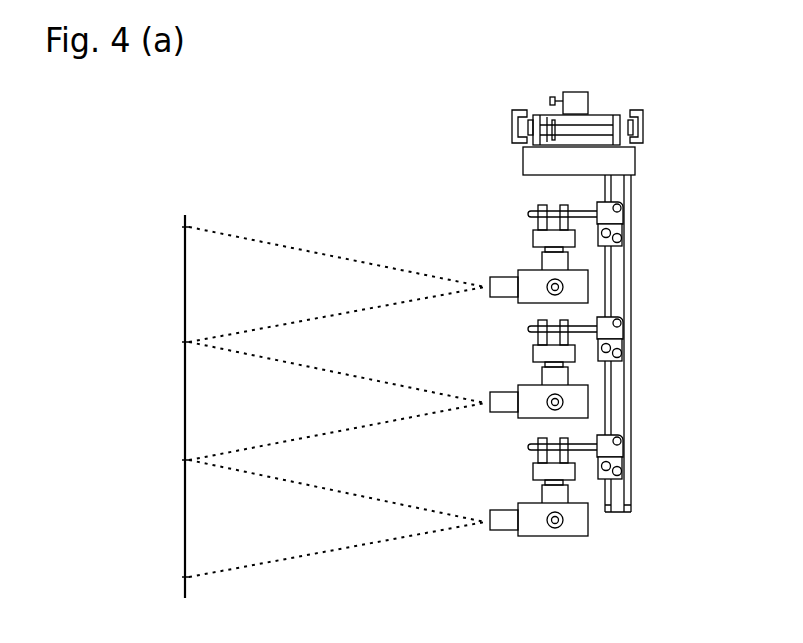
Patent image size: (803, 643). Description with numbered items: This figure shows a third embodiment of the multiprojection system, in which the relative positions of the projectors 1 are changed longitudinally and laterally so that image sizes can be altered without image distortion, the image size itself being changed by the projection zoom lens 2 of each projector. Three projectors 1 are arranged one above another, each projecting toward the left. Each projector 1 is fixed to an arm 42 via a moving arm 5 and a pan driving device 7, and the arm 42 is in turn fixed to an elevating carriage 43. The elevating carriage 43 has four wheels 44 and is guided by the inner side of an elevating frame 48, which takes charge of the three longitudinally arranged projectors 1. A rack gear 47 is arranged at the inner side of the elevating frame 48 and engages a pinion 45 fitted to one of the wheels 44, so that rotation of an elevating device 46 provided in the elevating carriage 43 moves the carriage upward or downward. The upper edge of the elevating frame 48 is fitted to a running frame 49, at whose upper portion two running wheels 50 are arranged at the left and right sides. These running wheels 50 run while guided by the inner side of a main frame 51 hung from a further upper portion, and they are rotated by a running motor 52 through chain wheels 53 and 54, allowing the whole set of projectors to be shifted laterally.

The projector 1 is at (535, 527).
The projection zoom lens 2 is at (502, 522).
The moving arm 5 is at (560, 502).
The pan driving device 7 is at (570, 475).
The arm 42 is at (530, 447).
The elevating carriage 43 is at (617, 450).
The wheels 44 is at (628, 417).
The pinion 45 is at (628, 495).
The elevating device 46 is at (608, 475).
The rack gear 47 is at (628, 362).
The elevating frame 48 is at (671, 356).
The running frame 49 is at (618, 162).
The running wheels 50 is at (637, 125).
The main frame 51 is at (640, 112).
The running motor 52 is at (577, 102).
The chain wheel 53 is at (553, 97).
The chain wheel 54 is at (548, 123).